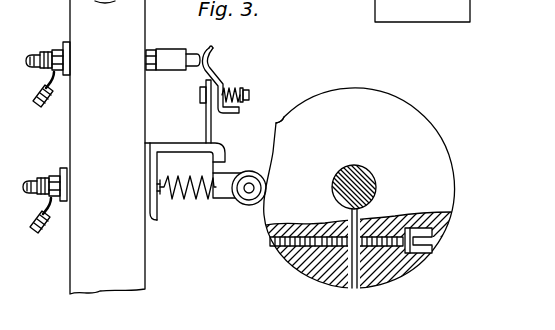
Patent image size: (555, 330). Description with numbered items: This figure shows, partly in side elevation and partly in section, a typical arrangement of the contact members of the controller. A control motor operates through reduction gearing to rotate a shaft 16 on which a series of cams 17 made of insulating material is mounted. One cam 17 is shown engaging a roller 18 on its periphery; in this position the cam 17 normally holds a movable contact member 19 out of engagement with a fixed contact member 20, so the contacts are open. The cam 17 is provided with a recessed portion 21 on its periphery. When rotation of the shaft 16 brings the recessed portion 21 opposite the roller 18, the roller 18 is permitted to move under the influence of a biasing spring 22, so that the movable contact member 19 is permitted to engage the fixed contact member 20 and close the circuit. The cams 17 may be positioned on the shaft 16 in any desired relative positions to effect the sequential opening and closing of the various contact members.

The shaft 16 is at (357, 166).
The cam 17 is at (433, 132).
The roller 18 is at (251, 171).
The movable contact member 19 is at (206, 122).
The fixed contact member 20 is at (196, 54).
The recessed portion 21 is at (280, 122).
The biasing spring 22 is at (172, 200).